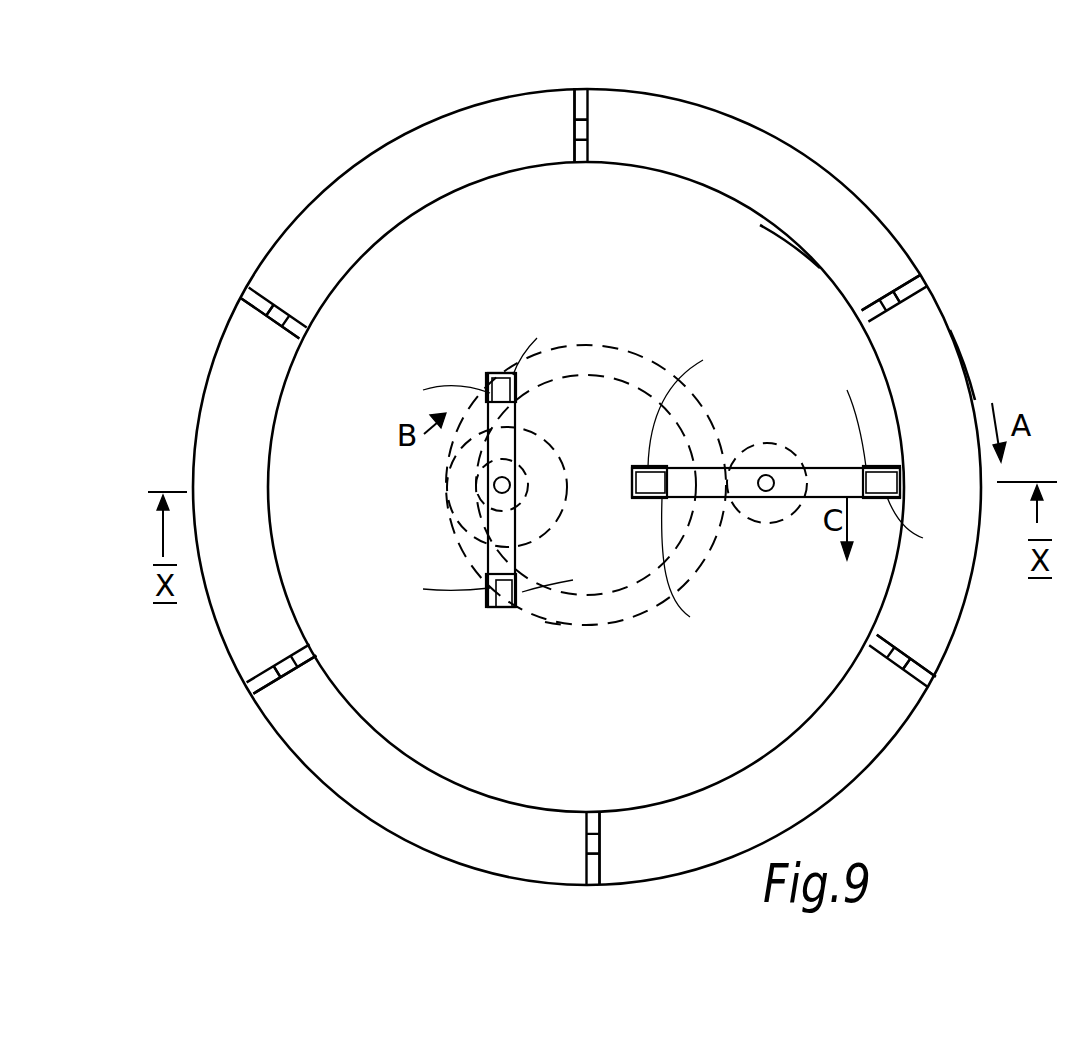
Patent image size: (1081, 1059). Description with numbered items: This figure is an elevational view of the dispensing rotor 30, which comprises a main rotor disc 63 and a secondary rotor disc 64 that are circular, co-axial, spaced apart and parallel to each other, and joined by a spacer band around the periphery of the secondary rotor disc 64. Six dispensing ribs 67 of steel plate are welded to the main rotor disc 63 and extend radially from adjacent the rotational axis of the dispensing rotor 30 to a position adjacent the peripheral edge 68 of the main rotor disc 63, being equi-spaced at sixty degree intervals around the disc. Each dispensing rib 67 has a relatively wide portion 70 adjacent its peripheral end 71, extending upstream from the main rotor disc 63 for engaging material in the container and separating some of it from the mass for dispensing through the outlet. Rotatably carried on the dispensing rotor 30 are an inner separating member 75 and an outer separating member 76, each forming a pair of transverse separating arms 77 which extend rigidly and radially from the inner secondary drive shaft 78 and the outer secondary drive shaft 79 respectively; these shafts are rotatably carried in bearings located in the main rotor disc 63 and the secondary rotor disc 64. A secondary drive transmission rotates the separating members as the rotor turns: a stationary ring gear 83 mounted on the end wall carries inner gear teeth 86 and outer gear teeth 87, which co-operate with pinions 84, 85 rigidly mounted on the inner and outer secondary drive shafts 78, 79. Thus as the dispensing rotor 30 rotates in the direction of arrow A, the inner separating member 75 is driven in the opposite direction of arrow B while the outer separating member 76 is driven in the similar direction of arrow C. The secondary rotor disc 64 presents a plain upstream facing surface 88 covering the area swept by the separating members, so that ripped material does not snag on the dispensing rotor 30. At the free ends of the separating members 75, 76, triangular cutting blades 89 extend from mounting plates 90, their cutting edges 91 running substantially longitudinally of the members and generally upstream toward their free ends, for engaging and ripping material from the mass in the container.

The dispensing rotor 30 is at (626, 473).
The main rotor disc 63 is at (835, 198).
The secondary rotor disc 64 is at (647, 200).
The dispensing ribs 67 is at (577, 132).
The peripheral edge 68 is at (975, 378).
The relatively wide portions 70 is at (588, 108).
The peripheral ends 71 is at (582, 90).
The inner separating member 75 is at (522, 490).
The outer separating member 76 is at (828, 492).
The transverse separating arms 77 is at (513, 450).
The inner secondary drive shaft 78 is at (490, 497).
The outer secondary drive shaft 79 is at (765, 497).
The stationary ring gear 83 is at (652, 612).
The pinion 84 is at (556, 498).
The pinion 85 is at (745, 445).
The inner gear teeth 86 is at (607, 590).
The outer gear teeth 87 is at (553, 625).
The upstream facing surface 88 is at (782, 270).
The cutting blades 89 is at (487, 393).
The mounting plate 90 is at (510, 405).
The cutting edges 91 is at (670, 475).